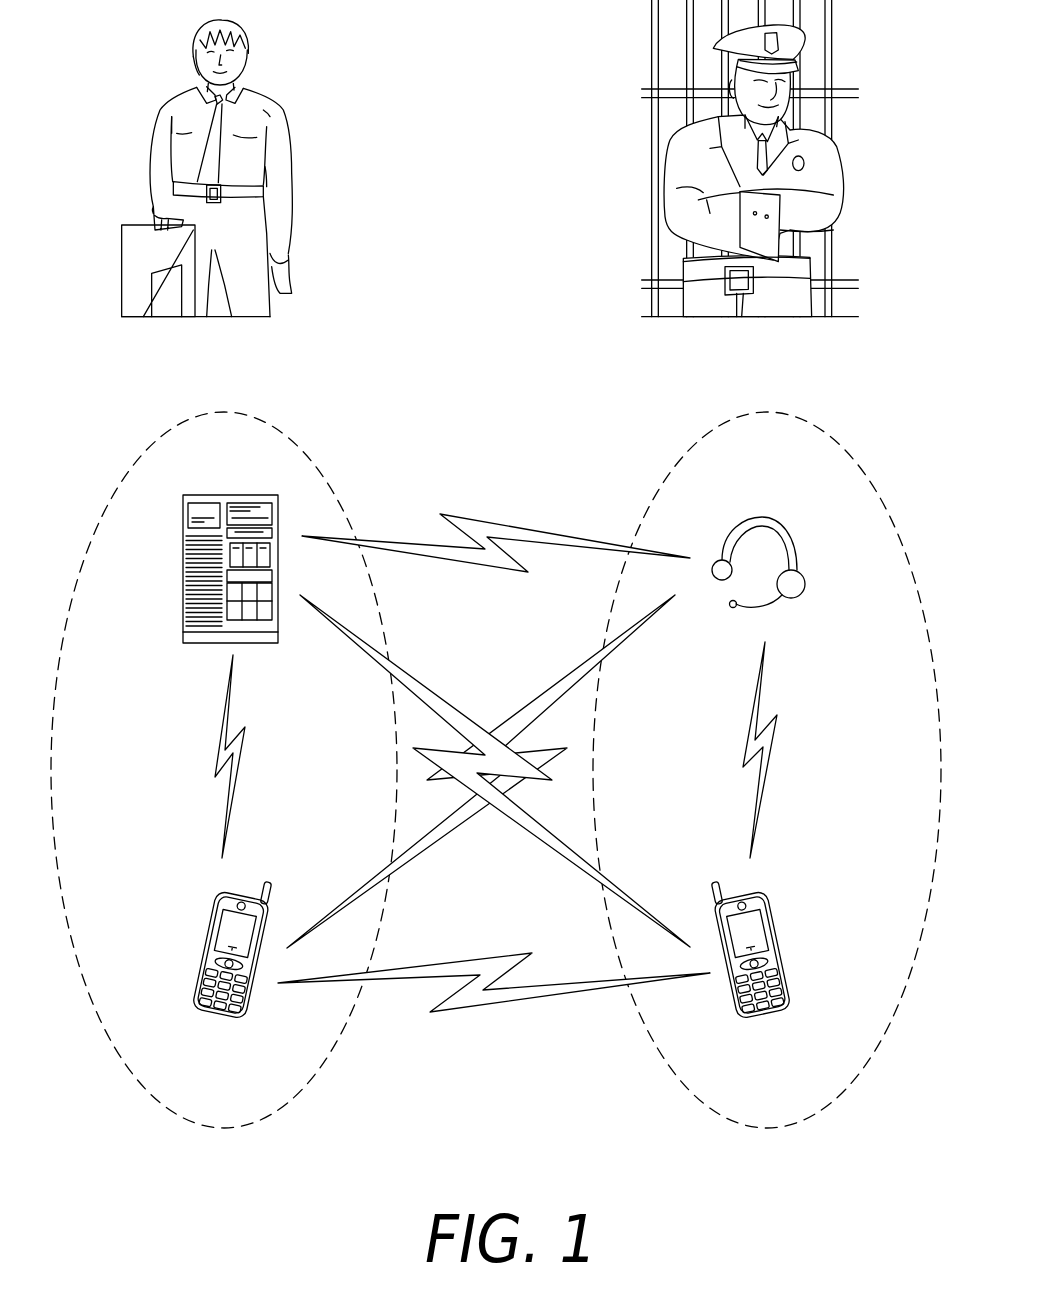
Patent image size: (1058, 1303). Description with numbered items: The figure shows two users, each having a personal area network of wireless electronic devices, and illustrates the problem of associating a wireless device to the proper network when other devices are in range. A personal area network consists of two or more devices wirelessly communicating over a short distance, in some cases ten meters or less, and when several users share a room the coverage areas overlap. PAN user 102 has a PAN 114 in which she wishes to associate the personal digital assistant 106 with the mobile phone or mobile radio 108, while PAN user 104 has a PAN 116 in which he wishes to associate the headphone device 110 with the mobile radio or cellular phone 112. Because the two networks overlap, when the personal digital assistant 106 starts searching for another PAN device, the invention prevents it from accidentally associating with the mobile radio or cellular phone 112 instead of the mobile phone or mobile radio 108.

The PAN user 102 is at (287, 147).
The PAN user 104 is at (837, 145).
The personal digital assistant 106 is at (208, 493).
The mobile phone or mobile radio 108 is at (223, 893).
The headphone device 110 is at (773, 515).
The mobile radio or cellular phone 112 is at (757, 893).
The PAN 114 is at (267, 423).
The PAN 116 is at (808, 423).